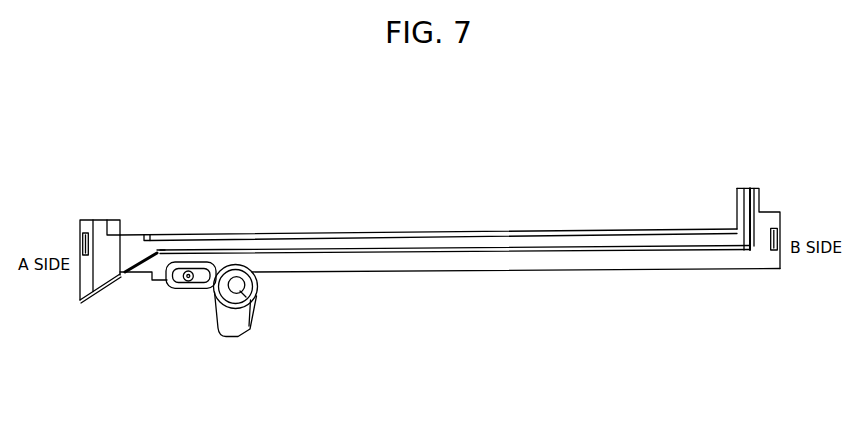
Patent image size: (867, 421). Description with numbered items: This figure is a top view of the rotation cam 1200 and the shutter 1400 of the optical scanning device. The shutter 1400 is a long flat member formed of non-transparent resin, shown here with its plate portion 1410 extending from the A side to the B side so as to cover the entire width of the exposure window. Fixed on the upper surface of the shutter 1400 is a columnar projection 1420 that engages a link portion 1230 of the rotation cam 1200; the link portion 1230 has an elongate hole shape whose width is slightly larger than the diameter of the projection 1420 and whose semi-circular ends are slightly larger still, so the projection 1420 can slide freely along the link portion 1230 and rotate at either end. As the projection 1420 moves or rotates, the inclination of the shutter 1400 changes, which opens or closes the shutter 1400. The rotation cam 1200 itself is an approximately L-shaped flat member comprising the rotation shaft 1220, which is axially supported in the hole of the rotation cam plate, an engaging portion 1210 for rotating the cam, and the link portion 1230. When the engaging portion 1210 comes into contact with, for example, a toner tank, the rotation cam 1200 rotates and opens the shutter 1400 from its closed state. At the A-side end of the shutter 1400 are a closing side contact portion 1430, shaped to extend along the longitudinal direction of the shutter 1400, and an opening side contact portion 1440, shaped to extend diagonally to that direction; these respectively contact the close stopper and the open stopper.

The shutter 1400 is at (425, 231).
The plate portion 1410 is at (497, 243).
The columnar projection 1420 is at (189, 271).
The closing side contact portion 1430 is at (88, 221).
The opening side contact portion 1440 is at (100, 293).
The rotation cam 1200 is at (230, 304).
The engaging portion 1210 is at (251, 313).
The rotation shaft 1220 is at (238, 288).
The link portion 1230 is at (203, 281).